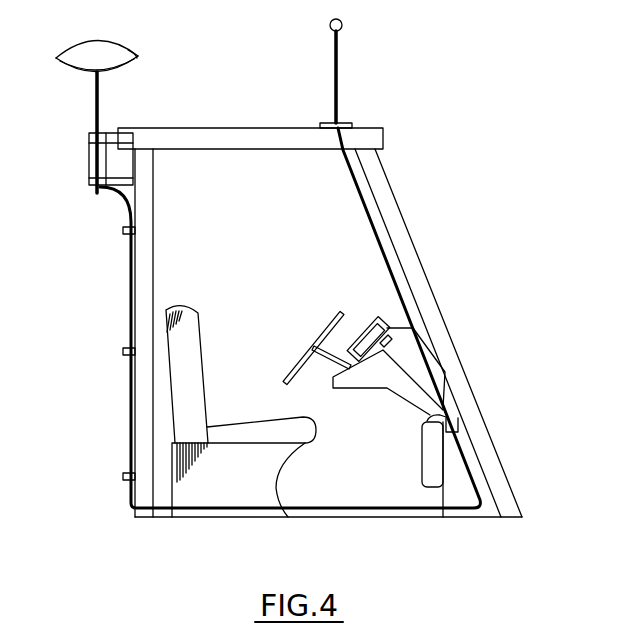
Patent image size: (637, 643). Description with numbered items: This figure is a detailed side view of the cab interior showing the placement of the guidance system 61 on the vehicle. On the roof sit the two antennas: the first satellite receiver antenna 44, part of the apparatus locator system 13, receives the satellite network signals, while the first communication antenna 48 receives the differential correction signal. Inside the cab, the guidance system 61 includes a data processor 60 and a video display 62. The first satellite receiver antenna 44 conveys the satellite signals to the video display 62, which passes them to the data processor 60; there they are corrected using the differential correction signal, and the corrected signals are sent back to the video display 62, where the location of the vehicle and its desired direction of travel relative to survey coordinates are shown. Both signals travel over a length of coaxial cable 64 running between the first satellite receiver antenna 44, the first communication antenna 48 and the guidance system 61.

The apparatus locator system 13 is at (314, 43).
The first satellite receiver antenna 44 is at (105, 48).
The first communication antenna 48 is at (338, 73).
The coaxial cable 64 is at (129, 311).
The guidance system 61 is at (415, 386).
The video display 62 is at (373, 320).
The data processor 60 is at (435, 452).